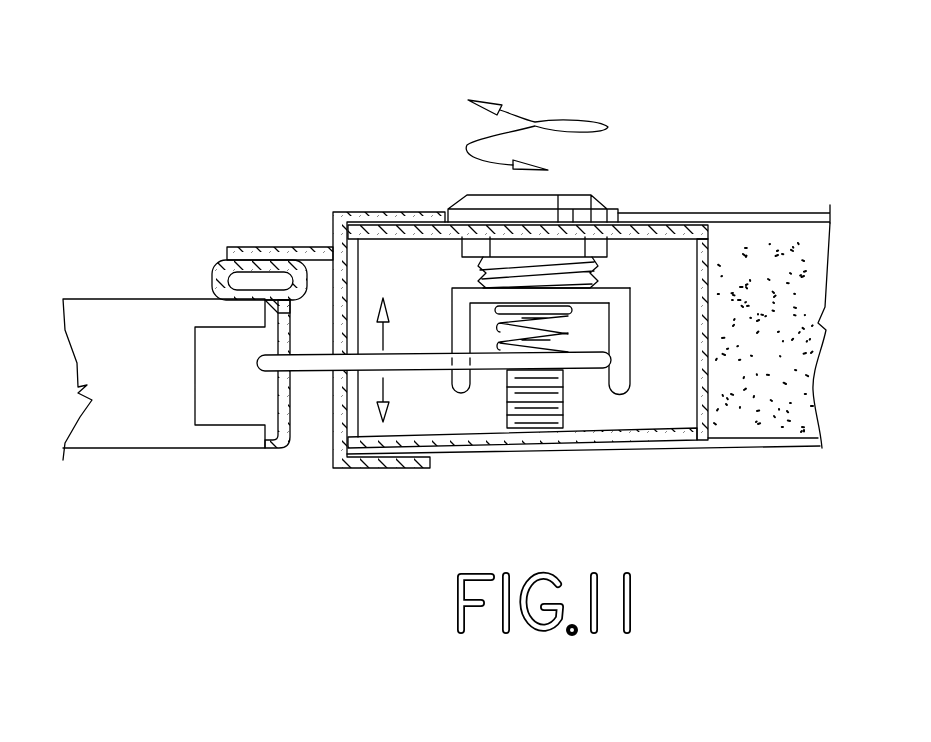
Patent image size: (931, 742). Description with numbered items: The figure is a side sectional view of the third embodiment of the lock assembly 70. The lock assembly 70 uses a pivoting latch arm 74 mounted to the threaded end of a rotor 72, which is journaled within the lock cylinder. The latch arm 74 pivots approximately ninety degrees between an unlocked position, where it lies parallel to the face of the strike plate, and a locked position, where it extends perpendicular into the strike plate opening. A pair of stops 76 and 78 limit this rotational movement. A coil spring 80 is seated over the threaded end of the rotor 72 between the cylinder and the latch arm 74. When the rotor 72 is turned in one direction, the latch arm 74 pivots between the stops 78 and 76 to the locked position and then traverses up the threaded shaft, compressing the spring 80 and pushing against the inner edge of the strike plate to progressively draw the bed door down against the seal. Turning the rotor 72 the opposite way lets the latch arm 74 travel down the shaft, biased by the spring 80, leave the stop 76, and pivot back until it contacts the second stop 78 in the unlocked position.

The lock assembly 70 is at (702, 162).
The rotor 72 is at (553, 407).
The latch arm 74 is at (415, 374).
The stop 76 is at (460, 327).
The second stop 78 is at (623, 342).
The coil spring 80 is at (577, 325).